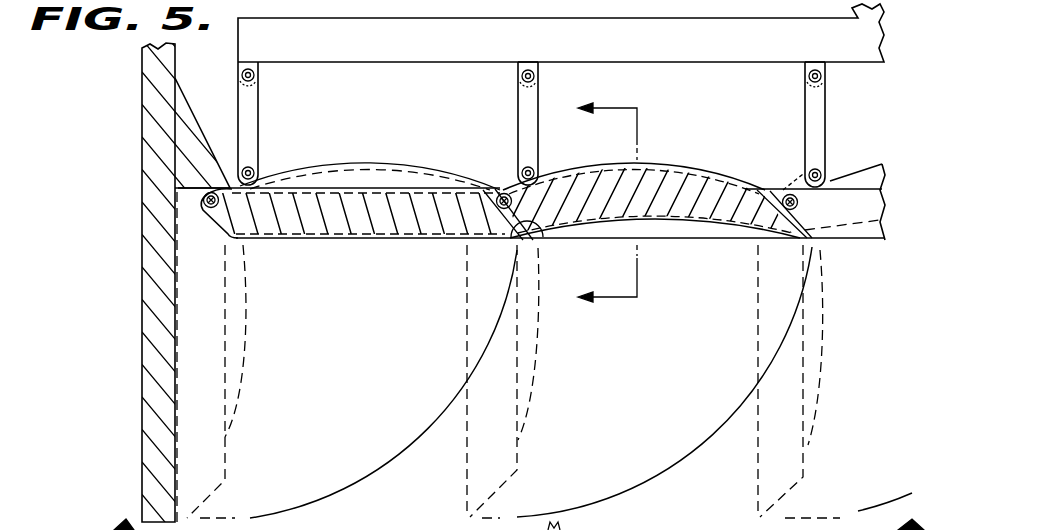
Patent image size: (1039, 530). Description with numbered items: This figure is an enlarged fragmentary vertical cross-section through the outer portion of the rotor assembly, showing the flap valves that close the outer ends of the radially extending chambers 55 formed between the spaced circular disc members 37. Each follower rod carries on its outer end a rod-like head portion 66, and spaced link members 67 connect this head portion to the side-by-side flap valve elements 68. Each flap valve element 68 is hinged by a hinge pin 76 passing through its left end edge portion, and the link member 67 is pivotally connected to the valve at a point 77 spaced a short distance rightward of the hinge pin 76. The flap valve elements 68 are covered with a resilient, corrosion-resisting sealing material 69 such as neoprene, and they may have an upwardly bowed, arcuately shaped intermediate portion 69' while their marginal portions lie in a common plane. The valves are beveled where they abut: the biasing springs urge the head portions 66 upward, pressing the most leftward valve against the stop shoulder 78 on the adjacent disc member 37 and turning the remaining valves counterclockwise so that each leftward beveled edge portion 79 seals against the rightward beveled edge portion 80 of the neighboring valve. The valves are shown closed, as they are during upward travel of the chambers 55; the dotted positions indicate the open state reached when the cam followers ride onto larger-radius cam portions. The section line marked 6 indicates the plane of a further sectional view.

The circular disc member 37 is at (150, 326).
The stop shoulder 78 is at (210, 167).
The rod-like head portion 66 is at (350, 48).
The link member 67 is at (520, 112).
The pivotal connection point 77 is at (253, 173).
The radially extending chamber 55 is at (444, 134).
The section line 6 is at (621, 209).
The flap valve element 68 is at (370, 228).
The sealing material 69 is at (370, 276).
The arcuately shaped intermediate portion 69' is at (671, 224).
The hinge pin 76 is at (212, 217).
The rightward beveled edge portion 80 is at (490, 242).
The leftward beveled edge portion 79 is at (538, 216).